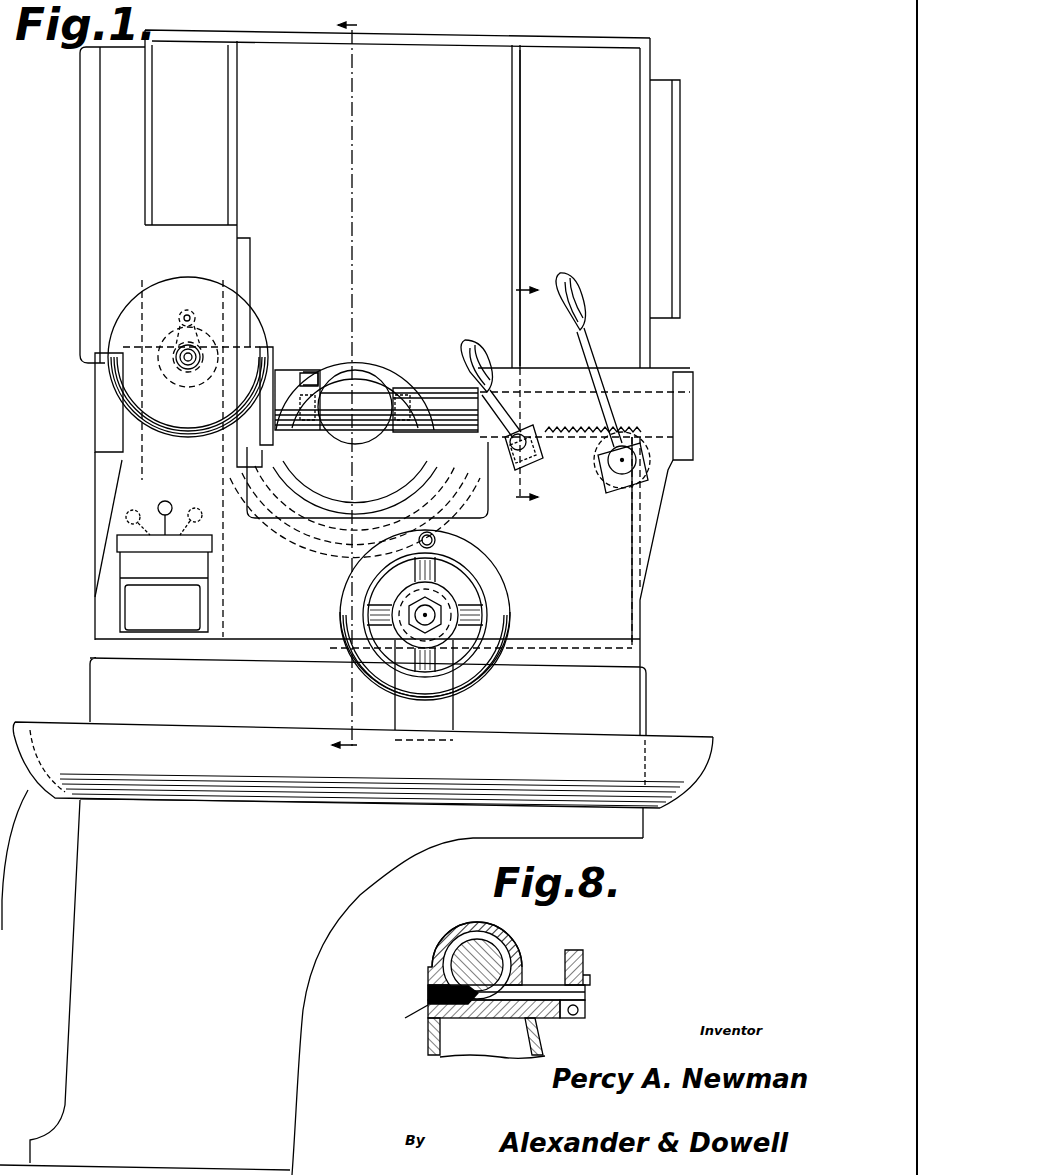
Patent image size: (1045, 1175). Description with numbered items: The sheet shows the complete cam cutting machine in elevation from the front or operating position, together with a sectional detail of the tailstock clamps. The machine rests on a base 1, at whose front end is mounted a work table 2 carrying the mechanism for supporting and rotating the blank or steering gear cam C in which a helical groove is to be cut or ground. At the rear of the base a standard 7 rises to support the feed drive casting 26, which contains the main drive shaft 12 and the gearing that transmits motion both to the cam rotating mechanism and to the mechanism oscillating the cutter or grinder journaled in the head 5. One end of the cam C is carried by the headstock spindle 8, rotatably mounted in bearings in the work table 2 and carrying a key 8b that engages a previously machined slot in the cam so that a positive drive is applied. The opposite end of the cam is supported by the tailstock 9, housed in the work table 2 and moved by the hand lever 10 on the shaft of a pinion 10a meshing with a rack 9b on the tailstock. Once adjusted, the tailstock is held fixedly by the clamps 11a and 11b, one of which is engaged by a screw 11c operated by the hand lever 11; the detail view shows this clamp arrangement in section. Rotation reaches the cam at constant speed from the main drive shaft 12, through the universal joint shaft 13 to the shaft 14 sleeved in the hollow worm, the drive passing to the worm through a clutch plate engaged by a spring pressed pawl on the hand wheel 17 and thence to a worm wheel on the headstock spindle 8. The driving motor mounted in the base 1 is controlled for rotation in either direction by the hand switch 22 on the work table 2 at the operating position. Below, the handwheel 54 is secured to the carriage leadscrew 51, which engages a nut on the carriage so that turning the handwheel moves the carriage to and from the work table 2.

In FIG. 1, the base 1 is at (356, 948).
In FIG. 1, the work table 2 is at (678, 570).
In FIG. 8, the work table 2 is at (460, 922).
In FIG. 1, the head 5 is at (375, 341).
In FIG. 1, the standard 7 is at (563, 208).
In FIG. 1, the headstock spindle 8 is at (292, 445).
In FIG. 1, the key 8b is at (318, 373).
In FIG. 1, the tailstock 9 is at (425, 385).
In FIG. 8, the tailstock 9 is at (483, 950).
In FIG. 1, the rack 9b is at (640, 433).
In FIG. 1, the hand lever 10 is at (590, 346).
In FIG. 1, the pinion 10a is at (597, 456).
In FIG. 1, the hand lever 11 is at (470, 340).
In FIG. 8, the hand lever 11 is at (583, 963).
In FIG. 8, the clamp 11a is at (428, 1046).
In FIG. 8, the clamp 11b is at (540, 988).
In FIG. 1, the screw 11c is at (528, 440).
In FIG. 8, the screw 11c is at (428, 992).
In FIG. 1, the main drive shaft 12 is at (190, 327).
In FIG. 1, the universal joint shaft 13 is at (175, 315).
In FIG. 1, the shaft 14 is at (200, 356).
In FIG. 1, the hand wheel 17 is at (160, 437).
In FIG. 1, the hand switch 22 is at (170, 505).
In FIG. 1, the feed drive casting 26 is at (113, 157).
In FIG. 1, the carriage leadscrew 51 is at (430, 611).
In FIG. 1, the handwheel 54 is at (478, 672).
In FIG. 1, the cam C is at (365, 445).